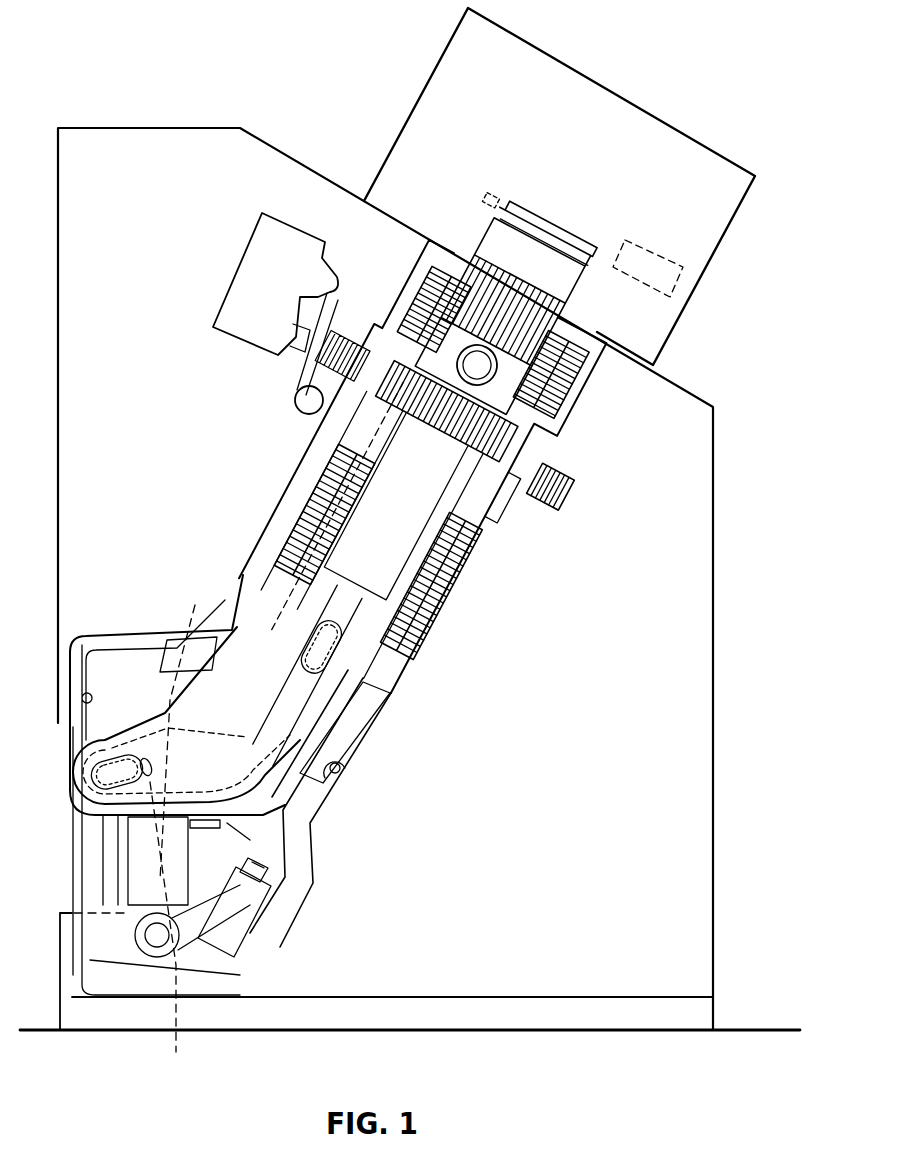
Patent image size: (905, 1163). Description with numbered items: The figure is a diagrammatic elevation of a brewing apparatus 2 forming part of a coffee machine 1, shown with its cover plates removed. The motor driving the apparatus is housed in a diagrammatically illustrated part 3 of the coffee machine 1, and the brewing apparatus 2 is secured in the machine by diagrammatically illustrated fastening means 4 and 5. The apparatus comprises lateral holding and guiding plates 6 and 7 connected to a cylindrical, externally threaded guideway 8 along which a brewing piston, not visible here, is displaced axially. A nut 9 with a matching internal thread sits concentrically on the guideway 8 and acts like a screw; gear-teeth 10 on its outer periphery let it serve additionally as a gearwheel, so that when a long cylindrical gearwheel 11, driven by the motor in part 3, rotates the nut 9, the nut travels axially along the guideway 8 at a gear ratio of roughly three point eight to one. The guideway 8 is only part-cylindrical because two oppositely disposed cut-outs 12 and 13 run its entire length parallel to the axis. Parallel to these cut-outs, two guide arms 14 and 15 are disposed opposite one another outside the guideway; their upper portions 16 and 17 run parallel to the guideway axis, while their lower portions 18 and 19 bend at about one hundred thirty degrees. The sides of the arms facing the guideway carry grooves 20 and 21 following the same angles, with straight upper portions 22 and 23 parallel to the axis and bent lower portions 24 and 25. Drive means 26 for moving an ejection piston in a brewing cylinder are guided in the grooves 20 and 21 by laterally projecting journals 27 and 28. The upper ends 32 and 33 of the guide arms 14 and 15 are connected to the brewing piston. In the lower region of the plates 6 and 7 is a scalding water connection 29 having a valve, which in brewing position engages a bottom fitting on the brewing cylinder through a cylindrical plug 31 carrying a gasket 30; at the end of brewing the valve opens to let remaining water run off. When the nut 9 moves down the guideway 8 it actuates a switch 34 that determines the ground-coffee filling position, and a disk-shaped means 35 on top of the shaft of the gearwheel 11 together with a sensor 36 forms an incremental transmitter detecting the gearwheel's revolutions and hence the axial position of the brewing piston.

The coffee machine 1 is at (718, 630).
The brewing apparatus 2 is at (288, 490).
The part of coffee machine 3 is at (611, 102).
The fastening means 4 is at (441, 262).
The fastening means 5 is at (600, 345).
The lateral holding and guiding plate 6 is at (351, 808).
The lateral holding and guiding plate 7 is at (320, 788).
The cylindrical guideway 8 is at (582, 396).
The nut 9 is at (586, 492).
The gear-teeth 10 is at (563, 461).
The cylindrical gearwheel 11 is at (547, 270).
The cut-out 12 is at (550, 549).
The cut-out 13 is at (520, 535).
The guide arm 14 is at (235, 561).
The guide arm 15 is at (250, 700).
The upper portion of guide arm 16 is at (481, 630).
The upper portion of guide arm 17 is at (410, 673).
The lower portion of guide arm 18 is at (177, 695).
The lower portion of guide arm 19 is at (112, 740).
The groove 20 is at (318, 835).
The groove 21 is at (300, 805).
The upper portion of groove 22 is at (391, 727).
The upper portion of groove 23 is at (315, 712).
The lower portion of groove 24 is at (136, 927).
The lower portion of groove 25 is at (136, 927).
The drive means 26 is at (140, 865).
The journal 27 is at (186, 729).
The journal 28 is at (186, 729).
The scalding water connection 29 is at (230, 933).
The gasket 30 is at (257, 867).
The cylindrical plug 31 is at (240, 905).
The upper end of guide arm 32 is at (533, 418).
The upper end of guide arm 33 is at (552, 441).
The switch 34 is at (246, 257).
The disk-shaped means 35 is at (492, 196).
The sensor 36 is at (660, 256).